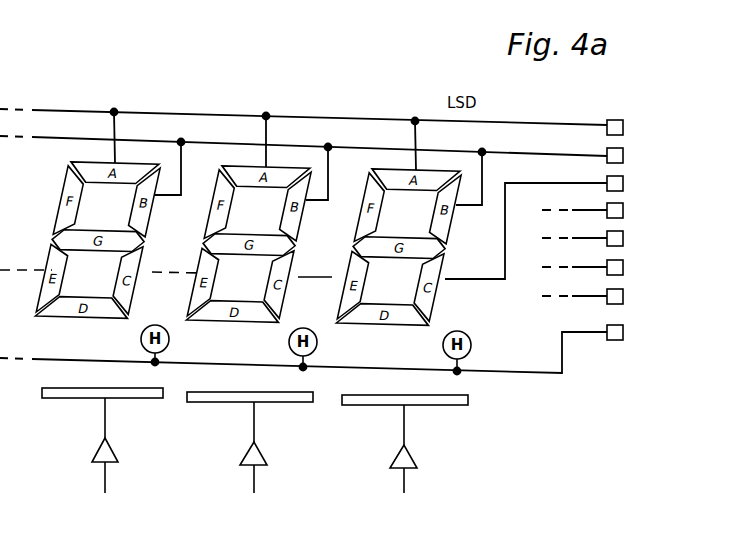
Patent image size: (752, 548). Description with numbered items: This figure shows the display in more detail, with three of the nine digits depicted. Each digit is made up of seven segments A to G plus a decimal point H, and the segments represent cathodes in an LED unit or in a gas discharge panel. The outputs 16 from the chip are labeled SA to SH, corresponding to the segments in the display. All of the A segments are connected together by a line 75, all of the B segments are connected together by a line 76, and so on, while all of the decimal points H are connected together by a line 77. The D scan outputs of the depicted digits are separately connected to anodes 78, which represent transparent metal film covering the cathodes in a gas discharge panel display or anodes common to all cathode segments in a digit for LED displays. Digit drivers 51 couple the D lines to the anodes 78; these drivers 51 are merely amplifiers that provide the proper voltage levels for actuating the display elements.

The outputs 16 is at (575, 146).
The line 75 is at (361, 118).
The line 76 is at (302, 148).
The line 77 is at (541, 372).
The anodes 78 is at (147, 399).
The digit drivers 51 is at (113, 455).